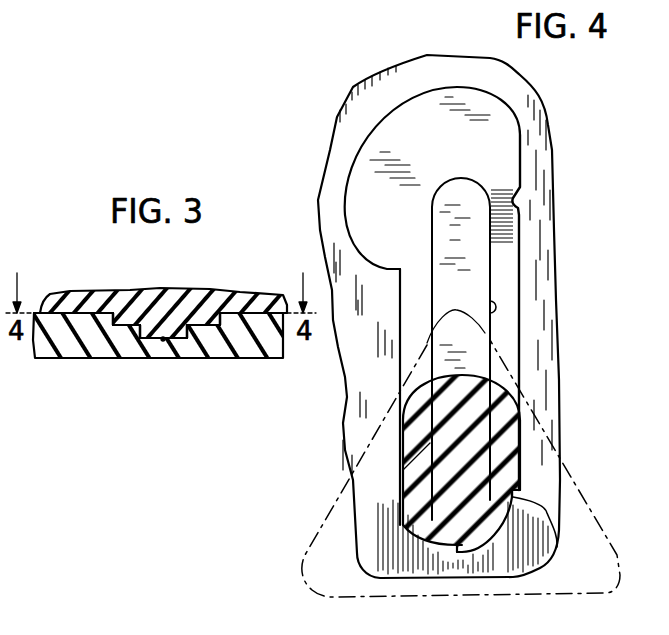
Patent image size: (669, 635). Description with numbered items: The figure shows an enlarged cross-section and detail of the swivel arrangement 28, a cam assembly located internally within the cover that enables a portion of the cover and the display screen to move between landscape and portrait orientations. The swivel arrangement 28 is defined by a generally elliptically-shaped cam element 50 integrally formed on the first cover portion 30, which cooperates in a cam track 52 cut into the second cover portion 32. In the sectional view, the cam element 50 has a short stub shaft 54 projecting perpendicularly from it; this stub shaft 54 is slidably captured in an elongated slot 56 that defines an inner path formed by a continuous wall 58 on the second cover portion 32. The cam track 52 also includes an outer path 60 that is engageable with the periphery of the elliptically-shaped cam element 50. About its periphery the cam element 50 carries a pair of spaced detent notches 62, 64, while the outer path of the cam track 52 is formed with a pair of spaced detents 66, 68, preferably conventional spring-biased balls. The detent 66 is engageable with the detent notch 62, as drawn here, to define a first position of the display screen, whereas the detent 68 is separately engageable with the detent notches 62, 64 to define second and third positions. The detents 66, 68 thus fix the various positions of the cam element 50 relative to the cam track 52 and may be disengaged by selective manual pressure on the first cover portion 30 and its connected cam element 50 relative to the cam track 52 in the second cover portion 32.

In FIG. 4, the swivel arrangement 28 is at (346, 80).
In FIG. 3, the first cover portion 30 is at (88, 298).
In FIG. 4, the first cover portion 30 is at (610, 577).
In FIG. 3, the second cover portion 32 is at (252, 347).
In FIG. 4, the second cover portion 32 is at (435, 68).
In FIG. 3, the cam element 50 is at (120, 328).
In FIG. 4, the cam element 50 is at (497, 433).
In FIG. 4, the cam track 52 is at (530, 178).
In FIG. 3, the stub shaft 54 is at (163, 341).
In FIG. 4, the stub shaft 54 is at (430, 490).
In FIG. 4, the elongated slot 56 is at (473, 260).
In FIG. 3, the continuous wall 58 is at (160, 338).
In FIG. 4, the continuous wall 58 is at (490, 322).
In FIG. 4, the outer path 60 is at (393, 108).
In FIG. 4, the detent notch 62 is at (558, 537).
In FIG. 4, the detent notch 64 is at (460, 553).
In FIG. 4, the detent 66 is at (522, 492).
In FIG. 4, the detent 68 is at (514, 207).